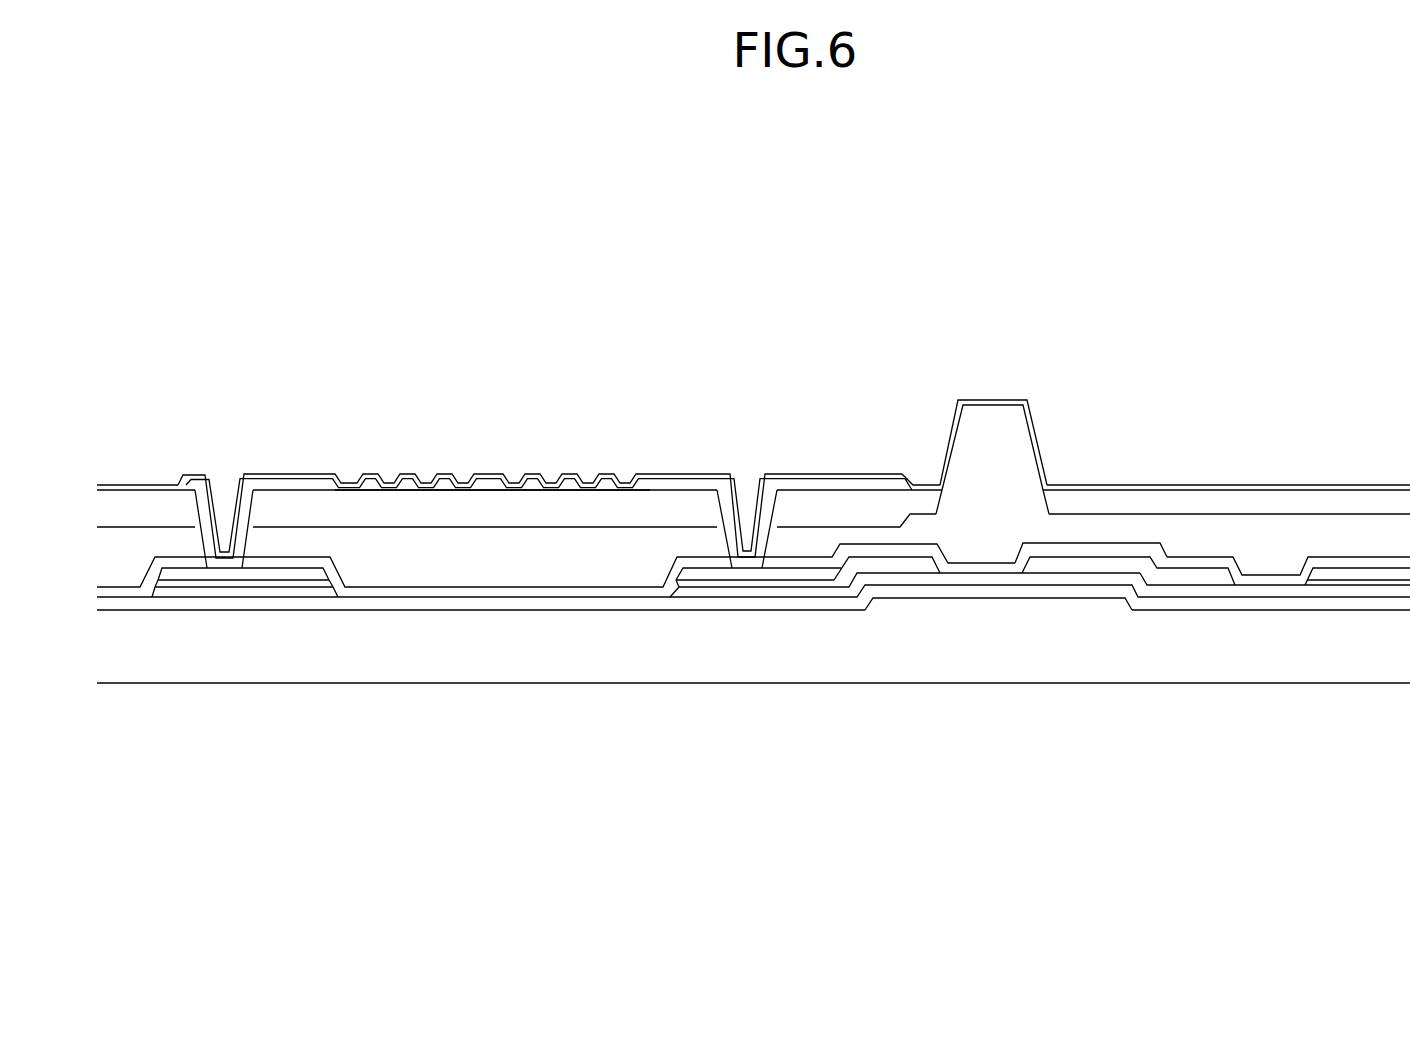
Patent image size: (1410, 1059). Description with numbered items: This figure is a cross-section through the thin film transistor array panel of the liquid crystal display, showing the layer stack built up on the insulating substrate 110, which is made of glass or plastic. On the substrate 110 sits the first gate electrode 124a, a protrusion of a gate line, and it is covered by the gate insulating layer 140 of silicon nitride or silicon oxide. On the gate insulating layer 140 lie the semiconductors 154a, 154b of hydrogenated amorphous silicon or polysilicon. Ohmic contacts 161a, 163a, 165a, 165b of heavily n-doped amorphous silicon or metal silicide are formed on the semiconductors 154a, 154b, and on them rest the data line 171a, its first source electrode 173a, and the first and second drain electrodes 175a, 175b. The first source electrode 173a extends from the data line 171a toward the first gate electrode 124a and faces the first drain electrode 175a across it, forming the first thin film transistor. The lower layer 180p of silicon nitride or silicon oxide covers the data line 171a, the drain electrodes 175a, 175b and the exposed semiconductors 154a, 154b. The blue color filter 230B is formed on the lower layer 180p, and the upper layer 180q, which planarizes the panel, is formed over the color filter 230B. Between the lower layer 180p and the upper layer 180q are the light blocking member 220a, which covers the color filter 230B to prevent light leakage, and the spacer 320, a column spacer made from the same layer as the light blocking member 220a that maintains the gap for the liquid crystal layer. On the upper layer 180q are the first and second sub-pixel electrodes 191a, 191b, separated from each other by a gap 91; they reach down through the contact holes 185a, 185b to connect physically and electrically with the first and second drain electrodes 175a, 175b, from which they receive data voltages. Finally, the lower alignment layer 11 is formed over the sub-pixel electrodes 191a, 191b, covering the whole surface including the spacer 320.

The insulating substrate 110 is at (461, 655).
The first gate electrode 124a is at (995, 603).
The gate insulating layer 140 is at (519, 604).
The semiconductor 154a is at (694, 596).
The semiconductor 154b is at (196, 598).
The ohmic contact 161a is at (1337, 585).
The ohmic contact 163a is at (1065, 572).
The ohmic contact 165a is at (735, 584).
The ohmic contact 165b is at (234, 582).
The data line 171a is at (1377, 575).
The first source electrode 173a is at (1103, 560).
The first drain electrode 175a is at (767, 575).
The second drain electrode 175b is at (264, 575).
The lower layer 180p is at (588, 595).
The upper layer 180q is at (121, 507).
The contact hole 185a is at (773, 505).
The contact hole 185b is at (198, 505).
The first sub-pixel electrode 191a is at (642, 487).
The second sub-pixel electrode 191b is at (310, 487).
The light blocking member 220a is at (1187, 540).
The blue color filter 230B is at (121, 567).
The spacer 320 is at (1013, 437).
The lower alignment layer 11 is at (812, 477).
The gap 91 is at (350, 482).